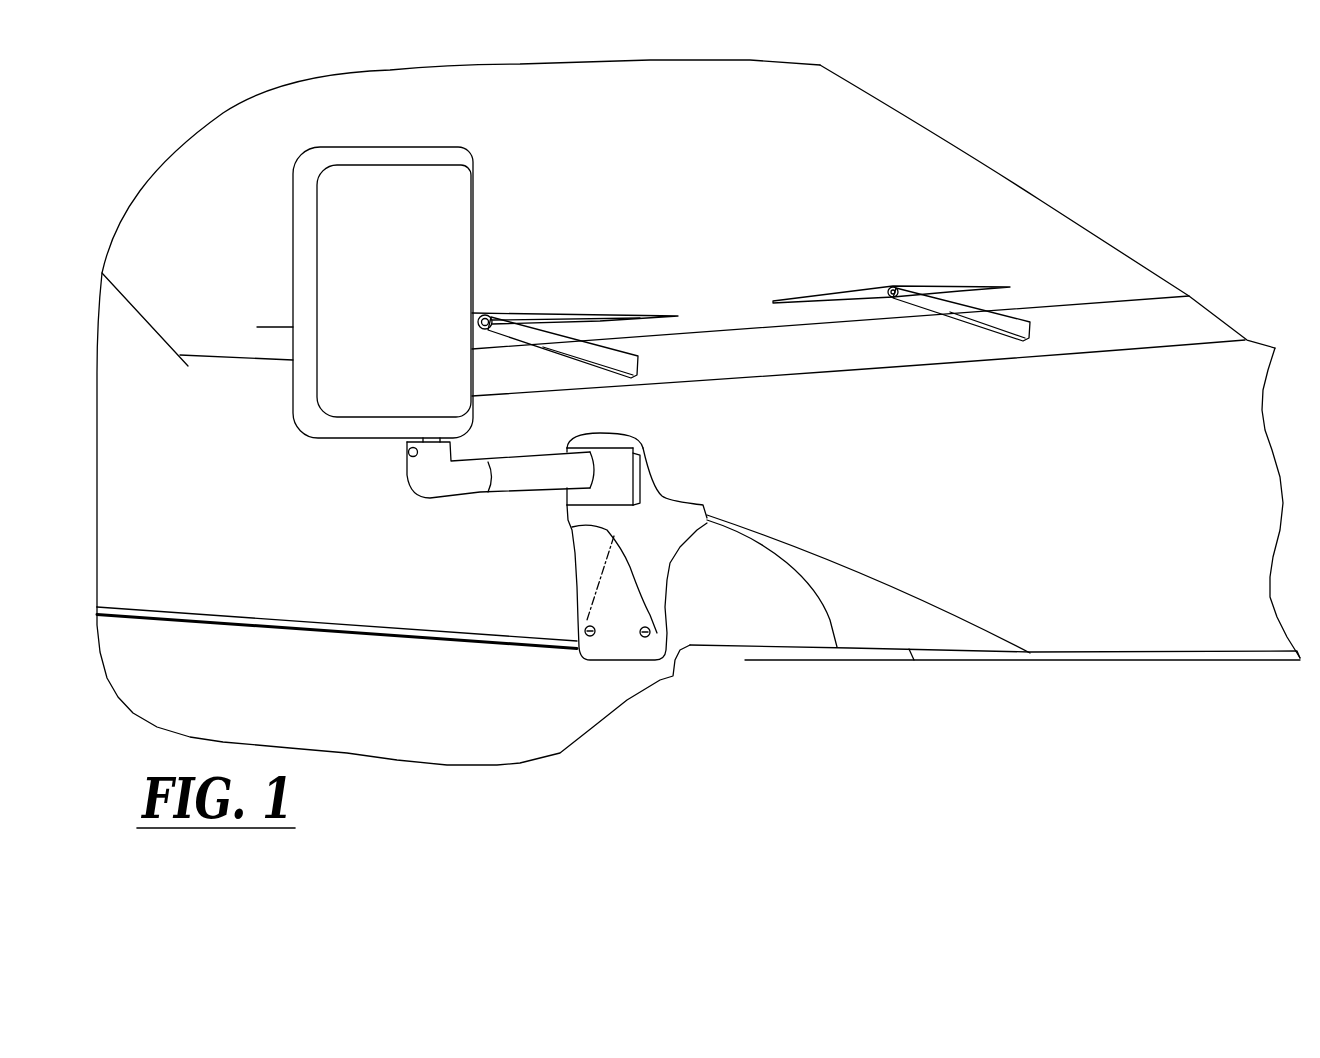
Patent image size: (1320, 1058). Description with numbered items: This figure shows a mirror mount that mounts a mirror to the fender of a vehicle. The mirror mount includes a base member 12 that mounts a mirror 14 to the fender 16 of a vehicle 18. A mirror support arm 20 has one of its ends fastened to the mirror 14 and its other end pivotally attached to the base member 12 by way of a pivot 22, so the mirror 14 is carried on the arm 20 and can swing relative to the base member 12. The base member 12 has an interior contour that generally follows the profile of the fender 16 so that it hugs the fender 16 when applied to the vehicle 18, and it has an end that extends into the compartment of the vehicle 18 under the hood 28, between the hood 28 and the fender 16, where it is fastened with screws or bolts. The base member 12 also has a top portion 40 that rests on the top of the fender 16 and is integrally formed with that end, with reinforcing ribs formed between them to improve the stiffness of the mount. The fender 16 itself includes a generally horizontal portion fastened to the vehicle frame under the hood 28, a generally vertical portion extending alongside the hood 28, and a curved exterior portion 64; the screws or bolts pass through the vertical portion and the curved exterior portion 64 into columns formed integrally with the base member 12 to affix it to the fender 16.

The base member 12 is at (590, 648).
The mirror 14 is at (307, 196).
The fender 16 is at (790, 633).
The vehicle 18 is at (1197, 490).
The mirror support arm 20 is at (527, 477).
The pivot 22 is at (613, 495).
The hood 28 is at (1120, 618).
The top portion 40 is at (1033, 655).
The curved exterior portion 64 is at (802, 608).